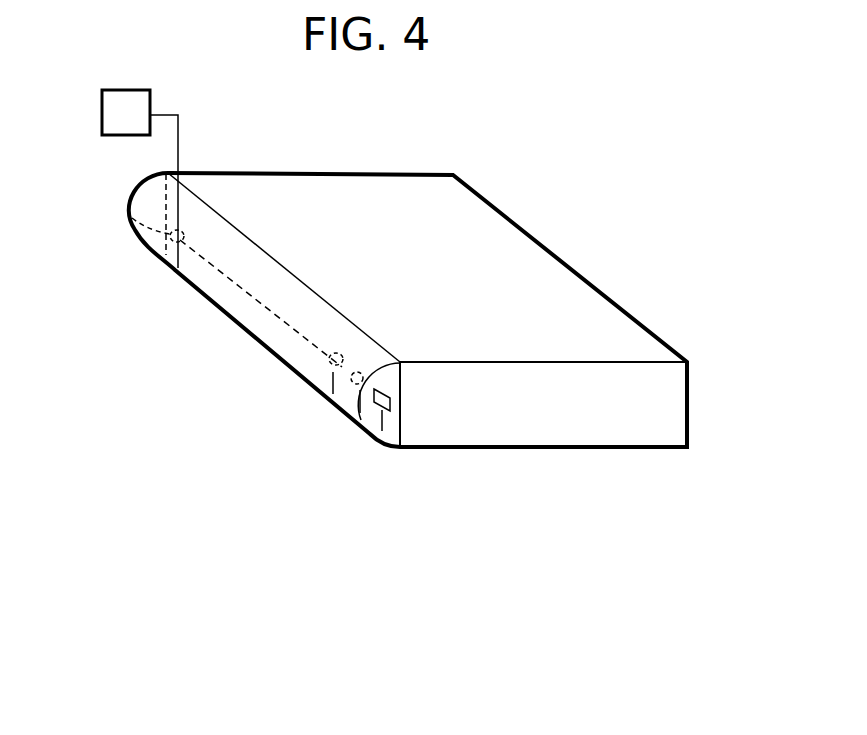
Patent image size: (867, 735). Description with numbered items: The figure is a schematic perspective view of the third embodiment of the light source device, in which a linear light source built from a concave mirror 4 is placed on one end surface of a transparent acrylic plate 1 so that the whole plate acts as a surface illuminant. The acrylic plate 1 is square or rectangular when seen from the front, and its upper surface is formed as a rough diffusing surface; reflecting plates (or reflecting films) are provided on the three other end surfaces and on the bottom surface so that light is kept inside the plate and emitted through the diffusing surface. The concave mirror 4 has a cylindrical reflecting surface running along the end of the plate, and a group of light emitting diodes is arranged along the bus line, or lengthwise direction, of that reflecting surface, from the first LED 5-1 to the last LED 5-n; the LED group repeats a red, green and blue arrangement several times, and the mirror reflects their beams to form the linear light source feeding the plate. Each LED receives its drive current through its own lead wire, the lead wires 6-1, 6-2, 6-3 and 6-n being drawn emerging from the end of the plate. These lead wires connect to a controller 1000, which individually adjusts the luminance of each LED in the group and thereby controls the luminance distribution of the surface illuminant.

The acrylic plate 1 is at (485, 222).
The concave mirror 4 is at (352, 342).
The controller 1000 is at (130, 97).
The LED 5-n is at (131, 213).
The lead wire 6-n is at (176, 267).
The lead wire 6-3 is at (334, 394).
The lead wire 6-2 is at (361, 413).
The lead wire 6-1 is at (383, 432).
The LED 5-1 is at (391, 405).